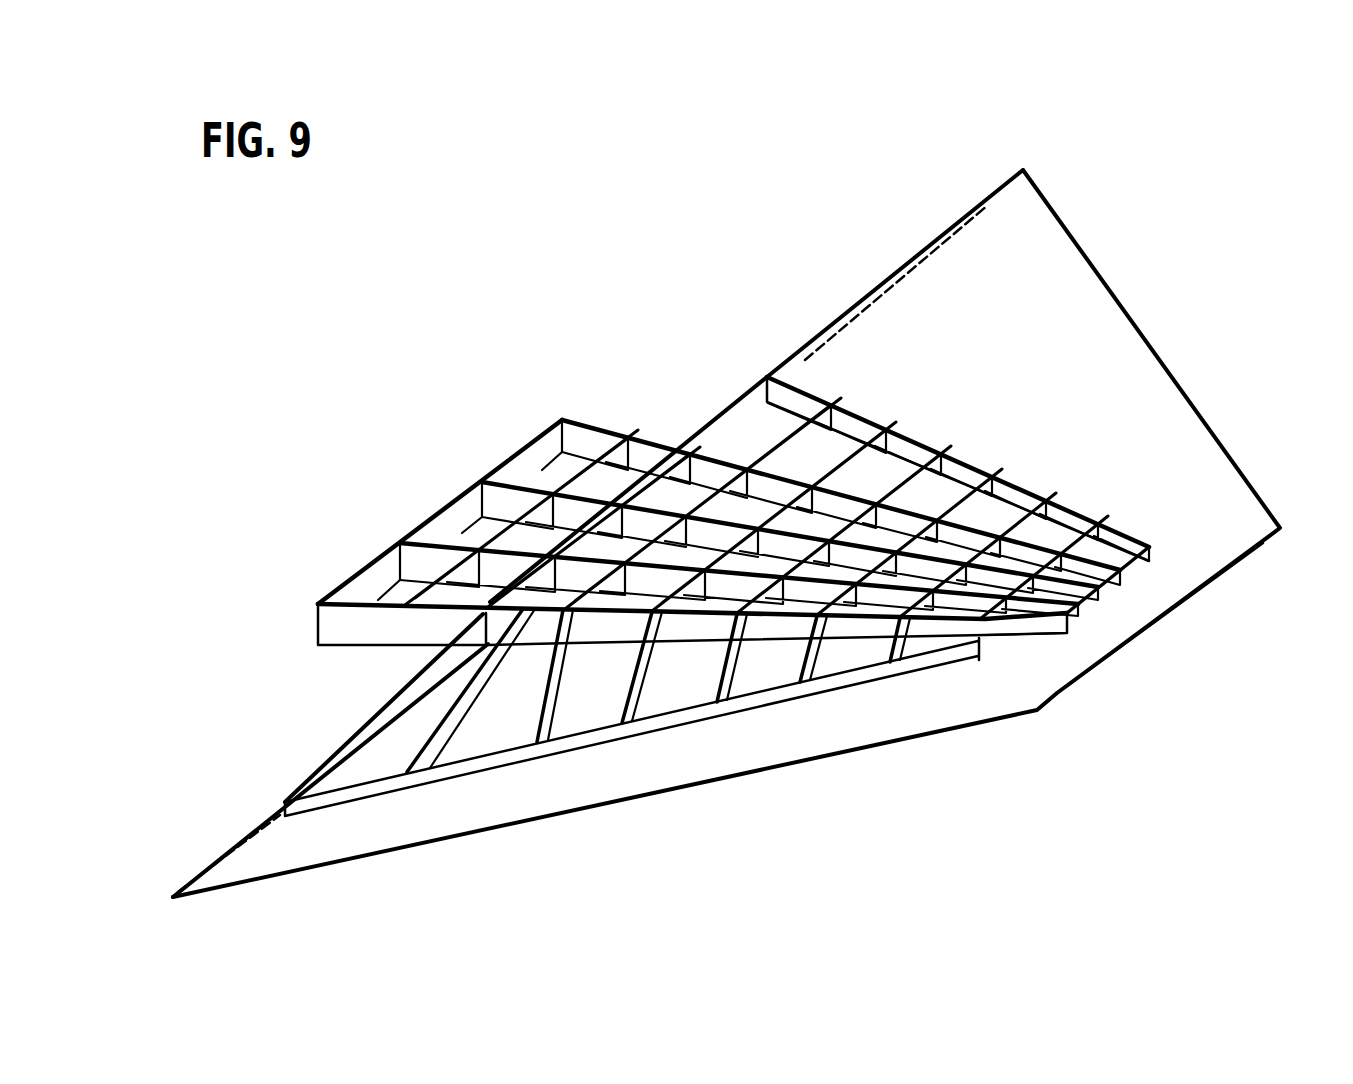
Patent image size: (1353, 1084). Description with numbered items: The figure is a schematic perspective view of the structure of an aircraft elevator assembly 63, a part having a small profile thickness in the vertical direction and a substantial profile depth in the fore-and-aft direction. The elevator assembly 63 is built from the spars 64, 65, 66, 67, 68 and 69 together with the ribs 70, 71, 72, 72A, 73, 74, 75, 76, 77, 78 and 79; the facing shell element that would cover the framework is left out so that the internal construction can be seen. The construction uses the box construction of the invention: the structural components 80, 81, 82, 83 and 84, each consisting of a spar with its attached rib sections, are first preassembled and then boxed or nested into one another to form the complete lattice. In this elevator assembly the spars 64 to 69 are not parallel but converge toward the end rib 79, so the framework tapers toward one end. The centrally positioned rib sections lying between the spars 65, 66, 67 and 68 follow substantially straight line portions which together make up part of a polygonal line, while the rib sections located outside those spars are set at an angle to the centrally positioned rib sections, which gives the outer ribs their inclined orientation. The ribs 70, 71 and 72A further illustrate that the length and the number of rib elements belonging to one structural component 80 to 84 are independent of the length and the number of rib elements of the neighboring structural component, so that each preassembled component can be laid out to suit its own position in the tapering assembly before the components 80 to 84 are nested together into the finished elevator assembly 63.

The aircraft elevator assembly 63 is at (1122, 222).
The spar 64 is at (352, 802).
The spar 65 is at (316, 622).
The spar 66 is at (427, 553).
The spar 67 is at (494, 490).
The spar 68 is at (578, 442).
The spar 69 is at (820, 392).
The rib 70 is at (528, 458).
The rib 71 is at (626, 458).
The rib 72 is at (332, 755).
The rib 72A is at (450, 725).
The rib 73 is at (558, 707).
The rib 74 is at (642, 702).
The rib 75 is at (737, 687).
The rib 76 is at (823, 675).
The support rib 77 is at (910, 647).
The rib 78 is at (1080, 523).
The end rib 79 is at (1183, 663).
The structural component 80 is at (755, 480).
The structural component 81 is at (330, 544).
The structural component 82 is at (360, 500).
The structural component 83 is at (445, 372).
The structural component 84 is at (740, 367).